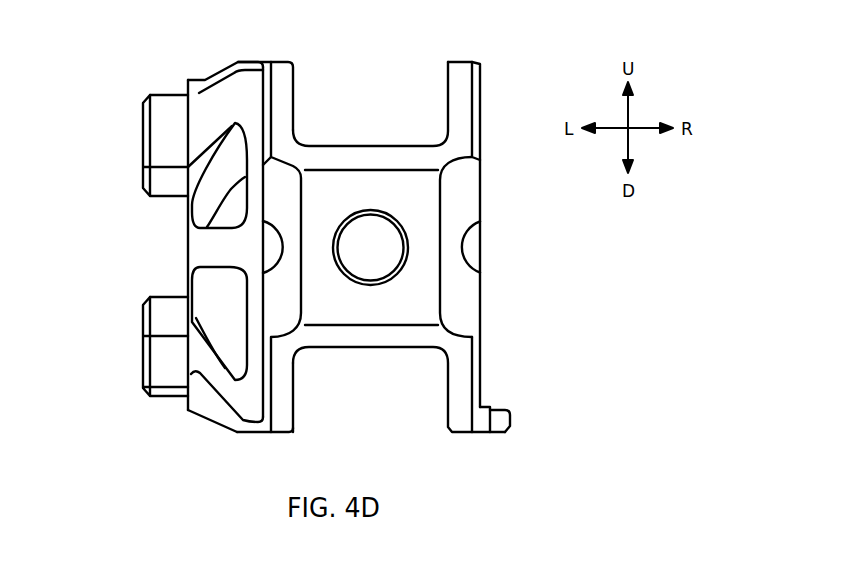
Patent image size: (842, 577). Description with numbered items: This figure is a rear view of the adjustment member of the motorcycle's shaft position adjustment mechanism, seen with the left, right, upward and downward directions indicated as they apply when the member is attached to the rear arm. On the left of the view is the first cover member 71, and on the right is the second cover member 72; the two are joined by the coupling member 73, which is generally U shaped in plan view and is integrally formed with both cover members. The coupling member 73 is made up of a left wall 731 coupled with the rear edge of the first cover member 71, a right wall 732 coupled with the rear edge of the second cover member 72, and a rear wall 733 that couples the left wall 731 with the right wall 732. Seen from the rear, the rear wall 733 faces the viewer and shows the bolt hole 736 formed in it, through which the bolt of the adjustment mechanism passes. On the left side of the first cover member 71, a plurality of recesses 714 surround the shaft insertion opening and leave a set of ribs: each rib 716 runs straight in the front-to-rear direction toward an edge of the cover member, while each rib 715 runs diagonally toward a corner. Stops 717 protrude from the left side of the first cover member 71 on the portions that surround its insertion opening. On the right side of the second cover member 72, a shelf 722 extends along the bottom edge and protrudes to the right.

The first cover member 71 is at (175, 245).
The second cover member 72 is at (485, 89).
The coupling member 73 is at (339, 148).
The recess 714 is at (184, 190).
The rib 715 is at (214, 104).
The rib 716 is at (212, 252).
The stop 717 is at (167, 130).
The shelf 722 is at (500, 408).
The left wall 731 is at (285, 207).
The right wall 732 is at (470, 312).
The rear wall 733 is at (366, 312).
The bolt hole 736 is at (368, 268).